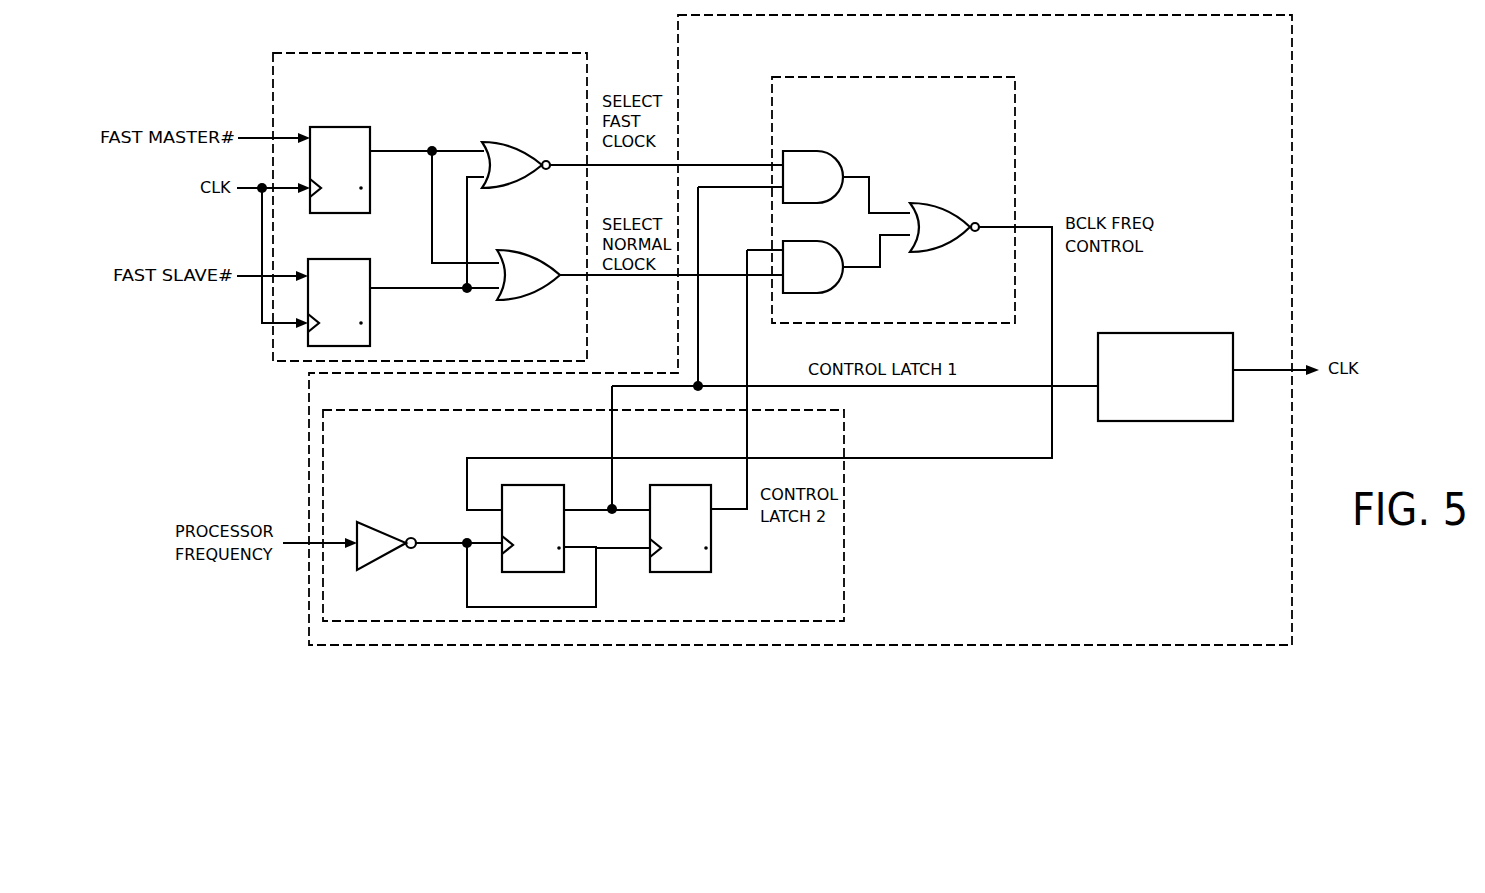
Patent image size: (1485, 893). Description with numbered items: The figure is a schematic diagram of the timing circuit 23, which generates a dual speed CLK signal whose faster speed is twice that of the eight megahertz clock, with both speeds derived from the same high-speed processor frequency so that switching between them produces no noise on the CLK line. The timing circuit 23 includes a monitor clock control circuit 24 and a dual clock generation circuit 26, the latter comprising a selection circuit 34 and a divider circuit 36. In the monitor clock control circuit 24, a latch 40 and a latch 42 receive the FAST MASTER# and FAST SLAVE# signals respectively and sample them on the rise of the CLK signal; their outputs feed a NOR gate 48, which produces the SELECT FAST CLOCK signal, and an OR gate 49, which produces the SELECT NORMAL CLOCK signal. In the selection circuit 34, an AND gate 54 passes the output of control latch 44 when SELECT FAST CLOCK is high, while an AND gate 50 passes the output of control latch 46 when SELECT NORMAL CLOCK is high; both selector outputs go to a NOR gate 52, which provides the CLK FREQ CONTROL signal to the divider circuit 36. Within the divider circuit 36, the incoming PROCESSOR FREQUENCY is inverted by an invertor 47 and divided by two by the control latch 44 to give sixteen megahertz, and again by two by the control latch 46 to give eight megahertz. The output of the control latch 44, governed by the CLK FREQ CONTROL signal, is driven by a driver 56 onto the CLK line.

The timing circuit 23 is at (1396, 124).
The monitor clock control circuit 24 is at (418, 53).
The dual clock generation circuit 26 is at (1293, 87).
The selection circuit 34 is at (880, 77).
The divider circuit 36 is at (845, 569).
The latch 40 is at (337, 127).
The latch 42 is at (340, 259).
The control latch 44 is at (533, 485).
The control latch 46 is at (680, 485).
The invertor 47 is at (380, 532).
The NOR gate 48 is at (505, 142).
The OR gate 49 is at (518, 250).
The AND gate 50 is at (818, 241).
The NOR gate 52 is at (932, 203).
The AND gate 54 is at (818, 151).
The driver 56 is at (1148, 333).